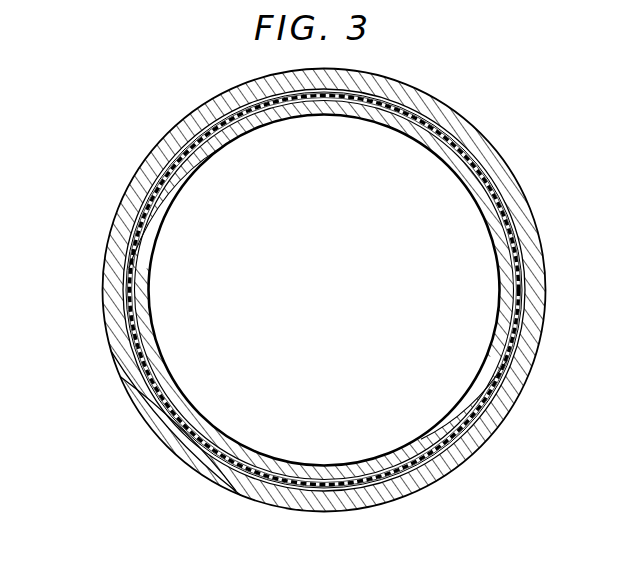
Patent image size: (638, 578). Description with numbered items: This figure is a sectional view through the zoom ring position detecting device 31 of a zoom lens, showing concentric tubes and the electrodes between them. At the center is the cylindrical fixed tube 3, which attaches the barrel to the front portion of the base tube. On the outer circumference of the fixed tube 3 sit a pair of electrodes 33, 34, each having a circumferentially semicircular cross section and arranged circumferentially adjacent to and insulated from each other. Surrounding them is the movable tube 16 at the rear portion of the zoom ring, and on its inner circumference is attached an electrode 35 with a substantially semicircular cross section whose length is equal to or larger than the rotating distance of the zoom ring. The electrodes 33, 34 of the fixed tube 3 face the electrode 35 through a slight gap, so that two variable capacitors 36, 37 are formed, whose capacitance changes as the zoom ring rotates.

The movable tube 16 is at (472, 125).
The electrode 35 is at (182, 120).
The electrode 34 is at (520, 394).
The electrode 33 is at (490, 170).
The zoom ring position detecting device 31 is at (104, 283).
The variable capacitor 36 is at (123, 195).
The variable capacitor 37 is at (128, 344).
The fixed tube 3 is at (314, 101).